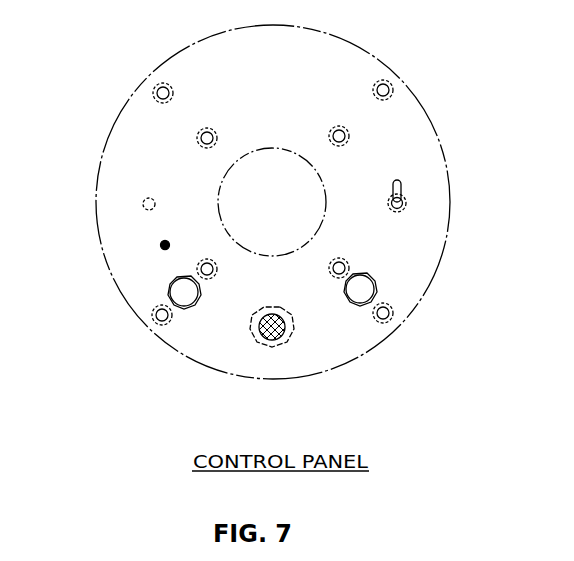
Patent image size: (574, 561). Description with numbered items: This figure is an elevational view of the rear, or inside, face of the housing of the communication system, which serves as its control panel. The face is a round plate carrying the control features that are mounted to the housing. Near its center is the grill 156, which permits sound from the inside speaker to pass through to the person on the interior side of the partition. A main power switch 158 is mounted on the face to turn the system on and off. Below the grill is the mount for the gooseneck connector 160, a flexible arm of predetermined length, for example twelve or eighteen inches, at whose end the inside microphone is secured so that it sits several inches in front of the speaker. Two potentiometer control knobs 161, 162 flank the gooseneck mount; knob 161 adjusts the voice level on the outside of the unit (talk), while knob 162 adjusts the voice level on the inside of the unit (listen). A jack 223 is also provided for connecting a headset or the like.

The grill 156 is at (260, 185).
The main power switch 158 is at (406, 200).
The gooseneck connector 160 is at (259, 332).
The potentiometer control knob 161 is at (173, 293).
The potentiometer control knob 162 is at (372, 288).
The jack 223 is at (143, 200).